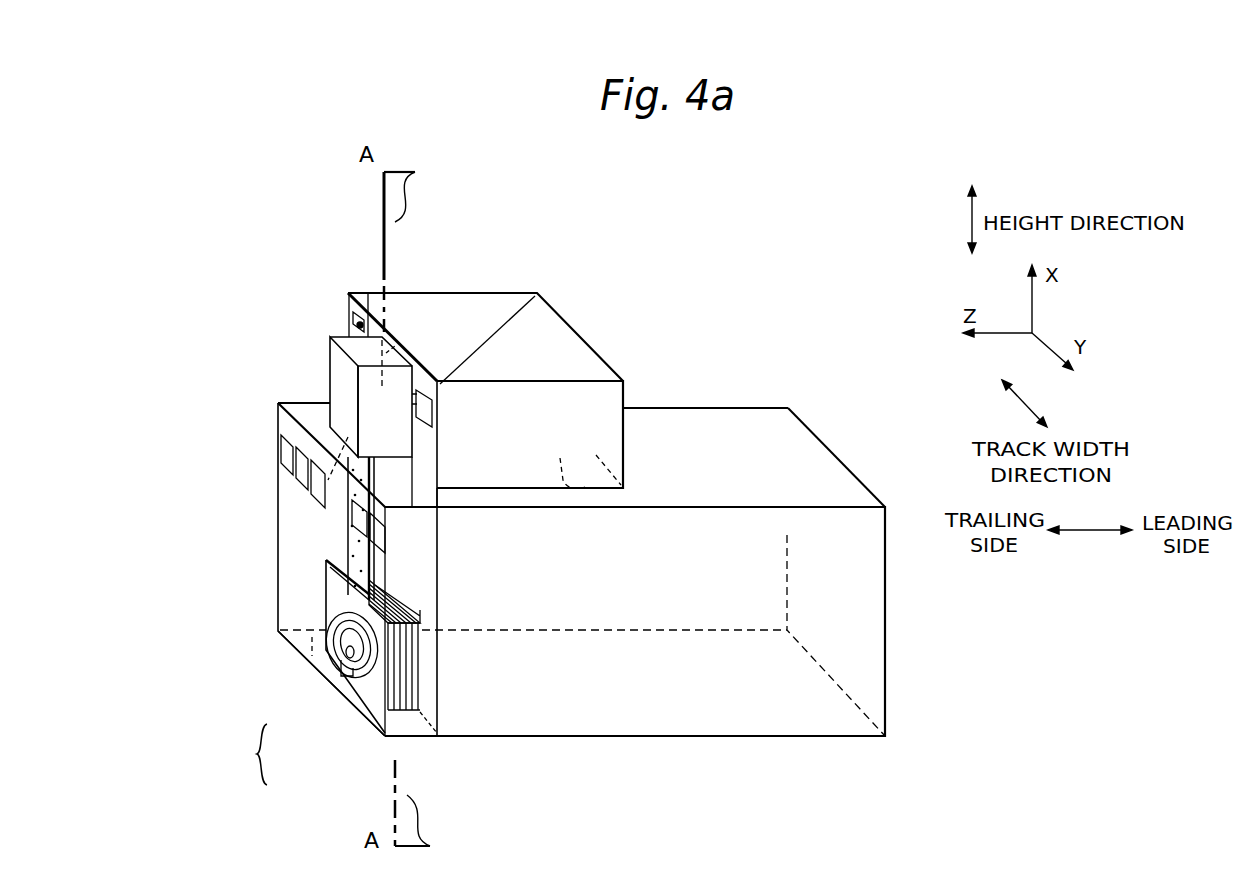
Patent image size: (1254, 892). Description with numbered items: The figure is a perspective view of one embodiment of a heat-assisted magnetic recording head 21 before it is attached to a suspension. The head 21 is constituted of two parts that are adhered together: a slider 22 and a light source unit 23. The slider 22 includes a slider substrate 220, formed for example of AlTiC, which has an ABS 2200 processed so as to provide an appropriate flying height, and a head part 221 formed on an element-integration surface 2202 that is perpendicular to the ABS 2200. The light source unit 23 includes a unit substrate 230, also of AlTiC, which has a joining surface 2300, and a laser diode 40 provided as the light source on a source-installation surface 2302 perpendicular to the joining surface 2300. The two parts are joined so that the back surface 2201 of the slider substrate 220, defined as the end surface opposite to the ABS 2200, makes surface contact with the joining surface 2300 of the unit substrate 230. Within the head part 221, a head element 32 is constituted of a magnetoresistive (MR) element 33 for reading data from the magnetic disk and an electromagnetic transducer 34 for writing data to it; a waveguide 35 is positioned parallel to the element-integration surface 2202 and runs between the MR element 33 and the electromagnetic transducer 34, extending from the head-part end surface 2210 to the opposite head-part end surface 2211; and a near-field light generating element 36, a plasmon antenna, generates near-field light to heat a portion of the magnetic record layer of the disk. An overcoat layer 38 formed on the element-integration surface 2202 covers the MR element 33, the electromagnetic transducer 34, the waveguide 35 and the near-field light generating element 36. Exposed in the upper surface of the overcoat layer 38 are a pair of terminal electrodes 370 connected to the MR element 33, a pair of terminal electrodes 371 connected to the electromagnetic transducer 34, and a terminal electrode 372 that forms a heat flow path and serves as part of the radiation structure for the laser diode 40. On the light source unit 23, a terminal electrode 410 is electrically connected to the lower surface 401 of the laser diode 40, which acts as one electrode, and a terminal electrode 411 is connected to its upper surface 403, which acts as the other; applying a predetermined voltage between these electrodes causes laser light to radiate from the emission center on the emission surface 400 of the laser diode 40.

The heat-assisted magnetic recording head 21 is at (700, 262).
The slider 22 is at (862, 565).
The slider substrate 220 is at (857, 617).
The head part 221 is at (296, 605).
The ABS 2200 is at (672, 693).
The back surface 2201 is at (800, 453).
The element-integration surface 2202 is at (420, 548).
The head-part end surface 2210 is at (303, 669).
The head-part end surface 2211 is at (400, 490).
The light source unit 23 is at (554, 298).
The unit substrate 230 is at (572, 345).
The joining surface 2300 is at (590, 487).
The source-installation surface 2302 is at (349, 303).
The head element 32 is at (242, 754).
The magnetoresistive (MR) element 33 is at (407, 730).
The electromagnetic transducer 34 is at (355, 695).
The waveguide 35 is at (352, 556).
The near-field light generating element 36 is at (368, 675).
The overcoat layer 38 is at (287, 502).
The terminal electrodes 370 is at (287, 468).
The terminal electrodes 371 is at (408, 560).
The terminal electrode 372 is at (350, 513).
The laser diode 40 is at (342, 403).
The emission surface 400 is at (348, 480).
The lower surface 401 is at (416, 392).
The upper surface 403 is at (345, 390).
The terminal electrode 410 is at (421, 388).
The terminal electrode 411 is at (360, 325).